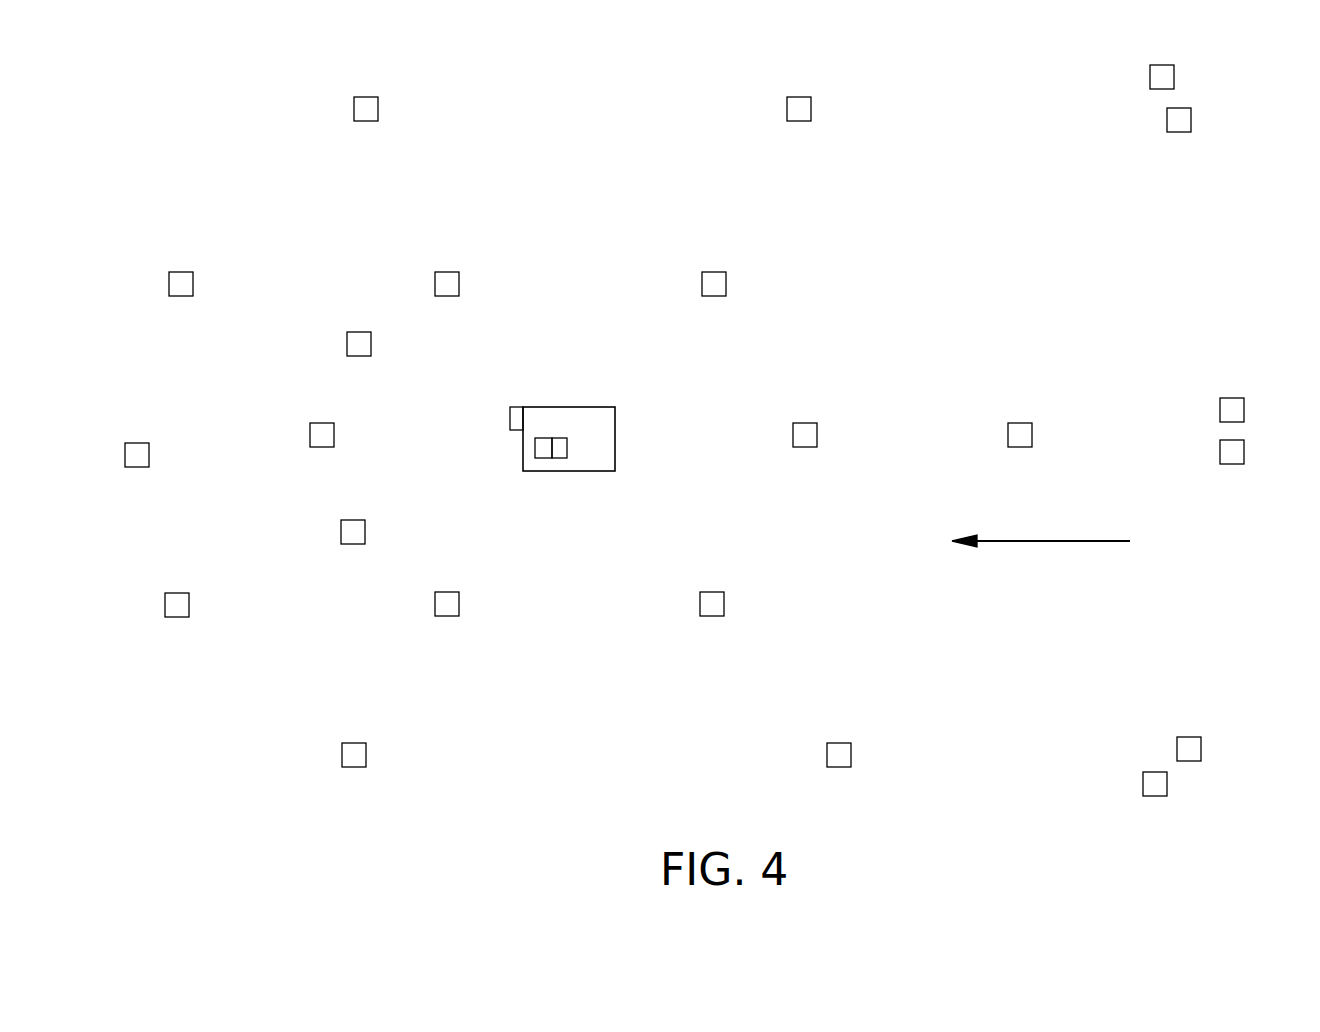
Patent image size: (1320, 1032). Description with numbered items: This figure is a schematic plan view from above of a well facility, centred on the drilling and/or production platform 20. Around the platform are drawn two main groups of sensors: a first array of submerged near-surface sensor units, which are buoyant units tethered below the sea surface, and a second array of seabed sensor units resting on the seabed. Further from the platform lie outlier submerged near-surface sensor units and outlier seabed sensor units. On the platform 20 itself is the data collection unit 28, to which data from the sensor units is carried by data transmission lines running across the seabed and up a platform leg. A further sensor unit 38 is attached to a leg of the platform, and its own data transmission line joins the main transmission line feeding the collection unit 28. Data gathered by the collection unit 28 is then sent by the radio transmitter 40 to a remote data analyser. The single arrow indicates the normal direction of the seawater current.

The drilling and/or production platform 20 is at (615, 437).
The data collection unit 28 is at (543, 458).
The further sensor unit 38 is at (510, 416).
The radio transmitter 40 is at (565, 438).